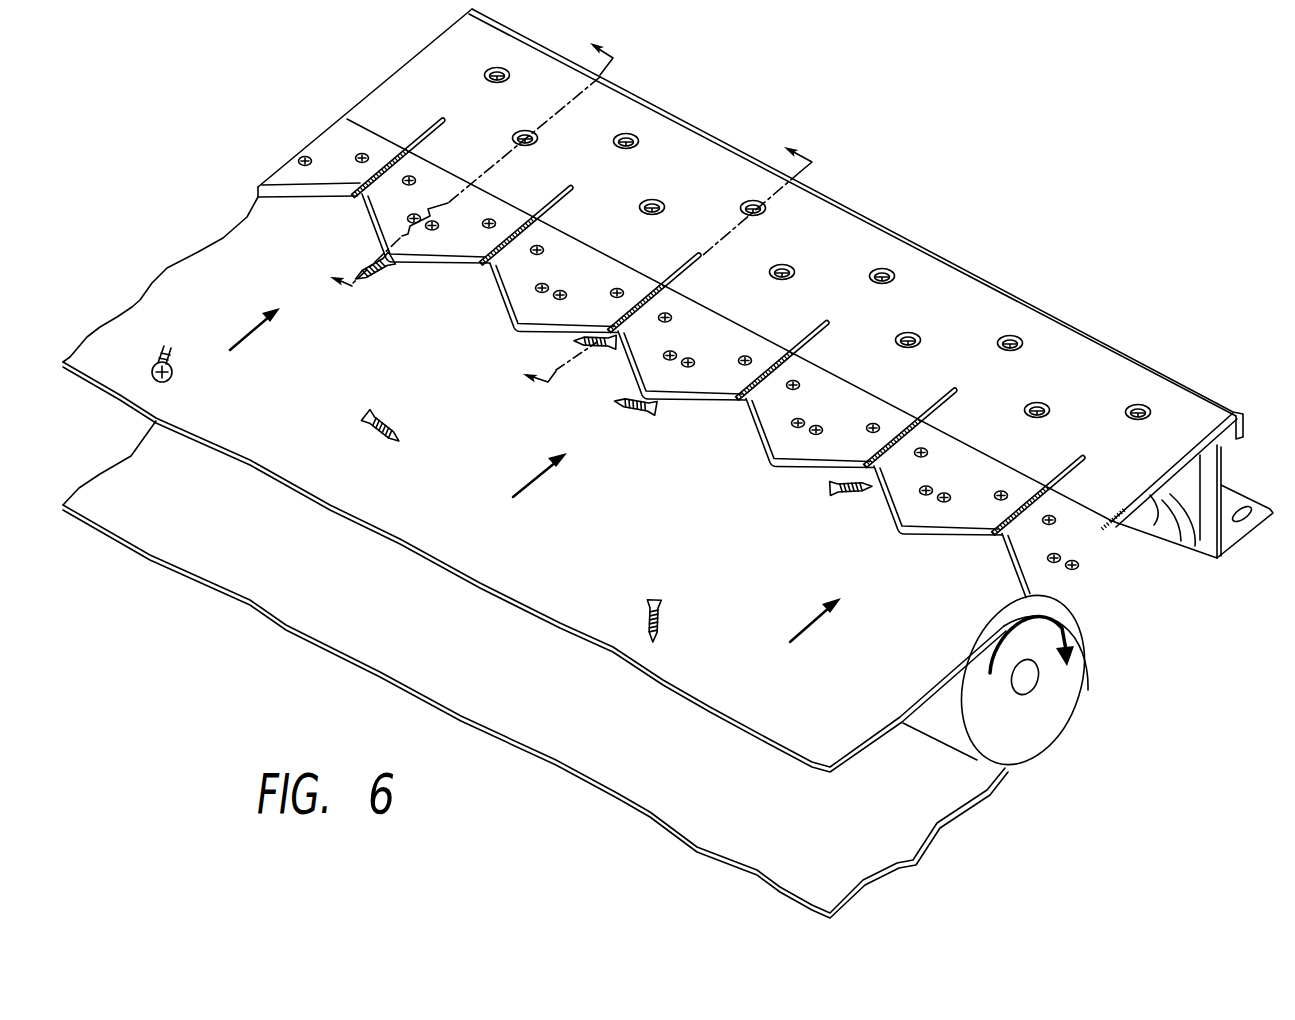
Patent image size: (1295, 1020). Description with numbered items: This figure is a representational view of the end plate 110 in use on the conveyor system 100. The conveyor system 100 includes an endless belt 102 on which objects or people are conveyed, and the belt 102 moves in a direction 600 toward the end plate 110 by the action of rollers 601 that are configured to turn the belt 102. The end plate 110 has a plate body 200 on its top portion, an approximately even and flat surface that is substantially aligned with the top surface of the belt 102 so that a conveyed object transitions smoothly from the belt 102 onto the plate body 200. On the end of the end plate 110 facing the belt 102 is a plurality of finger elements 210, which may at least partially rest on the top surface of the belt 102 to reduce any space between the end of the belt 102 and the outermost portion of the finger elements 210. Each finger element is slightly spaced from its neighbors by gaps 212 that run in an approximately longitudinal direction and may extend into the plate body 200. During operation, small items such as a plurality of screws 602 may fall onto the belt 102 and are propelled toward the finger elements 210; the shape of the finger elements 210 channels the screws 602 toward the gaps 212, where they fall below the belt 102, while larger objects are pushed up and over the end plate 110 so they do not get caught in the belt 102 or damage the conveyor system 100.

The conveyor system 100 is at (226, 110).
The belt 102 is at (197, 290).
The end plate 110 is at (906, 191).
The plate body 200 is at (986, 322).
The plurality of finger elements 210 is at (694, 451).
The gaps 212 is at (700, 250).
The direction 600 is at (813, 626).
The rollers 601 is at (1035, 714).
The plurality of screws 602 is at (367, 262).